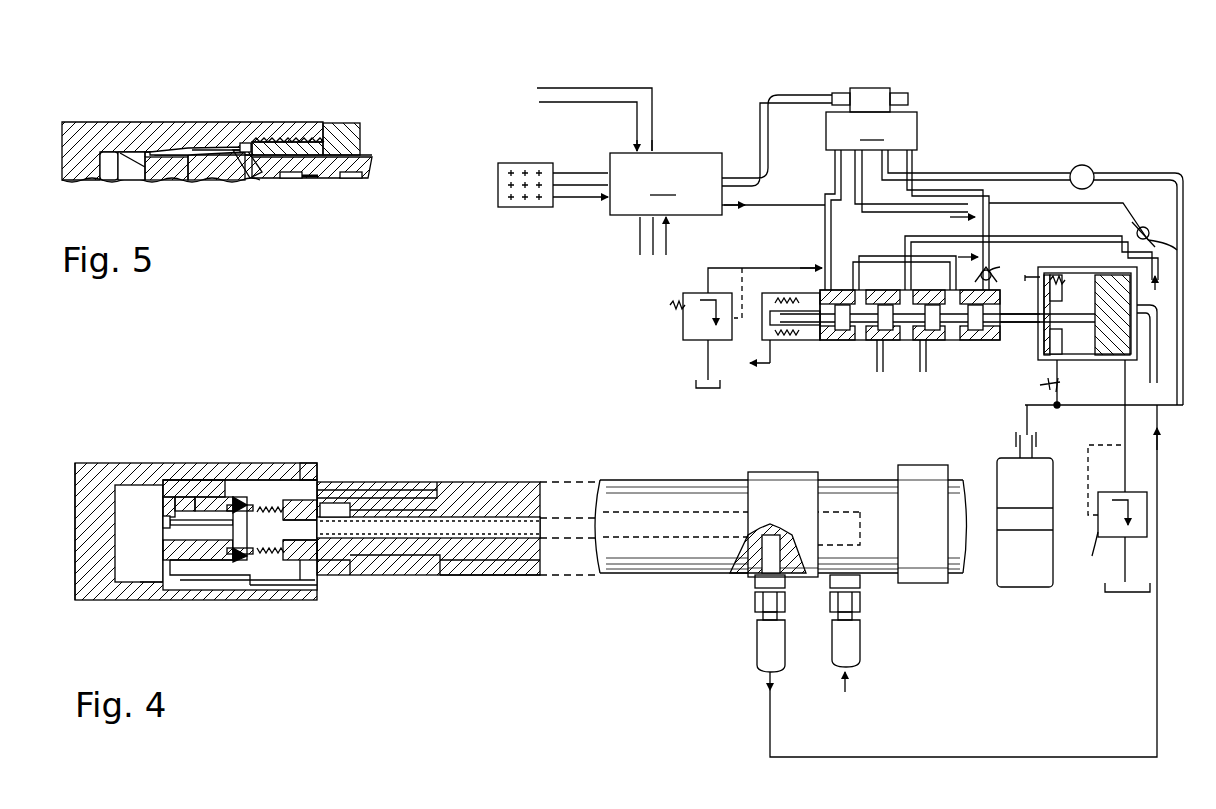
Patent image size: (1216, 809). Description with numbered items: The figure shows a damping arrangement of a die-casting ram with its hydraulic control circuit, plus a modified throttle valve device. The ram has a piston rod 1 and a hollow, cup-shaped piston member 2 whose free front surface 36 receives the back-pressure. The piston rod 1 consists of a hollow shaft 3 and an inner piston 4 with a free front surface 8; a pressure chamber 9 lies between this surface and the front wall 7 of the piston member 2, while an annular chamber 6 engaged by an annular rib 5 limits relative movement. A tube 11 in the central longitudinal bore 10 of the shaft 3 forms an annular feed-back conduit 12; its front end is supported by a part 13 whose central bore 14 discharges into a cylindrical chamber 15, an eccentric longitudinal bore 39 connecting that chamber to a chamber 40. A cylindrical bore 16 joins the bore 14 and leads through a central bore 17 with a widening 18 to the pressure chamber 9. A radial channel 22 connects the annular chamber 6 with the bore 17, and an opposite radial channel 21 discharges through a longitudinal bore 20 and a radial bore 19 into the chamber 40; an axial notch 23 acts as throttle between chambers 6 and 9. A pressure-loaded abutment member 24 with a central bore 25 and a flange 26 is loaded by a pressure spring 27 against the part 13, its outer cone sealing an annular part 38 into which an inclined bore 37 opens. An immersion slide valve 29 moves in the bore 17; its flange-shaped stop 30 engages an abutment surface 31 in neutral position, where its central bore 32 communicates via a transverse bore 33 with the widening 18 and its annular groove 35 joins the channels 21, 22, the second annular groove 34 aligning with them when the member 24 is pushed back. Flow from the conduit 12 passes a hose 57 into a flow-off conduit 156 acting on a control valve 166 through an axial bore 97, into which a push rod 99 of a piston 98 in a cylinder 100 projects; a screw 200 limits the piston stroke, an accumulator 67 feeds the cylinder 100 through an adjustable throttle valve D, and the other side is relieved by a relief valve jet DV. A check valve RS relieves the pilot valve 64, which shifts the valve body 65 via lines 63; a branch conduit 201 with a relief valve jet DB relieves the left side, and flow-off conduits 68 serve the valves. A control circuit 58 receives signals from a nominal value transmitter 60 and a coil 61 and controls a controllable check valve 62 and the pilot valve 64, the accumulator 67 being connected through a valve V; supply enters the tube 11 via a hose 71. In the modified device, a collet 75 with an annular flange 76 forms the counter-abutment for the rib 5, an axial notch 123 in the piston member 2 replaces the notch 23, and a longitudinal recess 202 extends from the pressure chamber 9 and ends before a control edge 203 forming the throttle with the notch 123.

In FIG. 4, the piston rod 1 is at (642, 521).
In FIG. 5, the piston member 2 is at (160, 120).
In FIG. 4, the piston member 2 is at (170, 536).
In FIG. 4, the hollow shaft 3 is at (505, 492).
In FIG. 4, the inner piston 4 is at (420, 492).
In FIG. 5, the annular rib 5 is at (245, 143).
In FIG. 4, the annular rib 5 is at (230, 590).
In FIG. 4, the annular chamber 6 is at (166, 478).
In FIG. 5, the front wall 7 is at (178, 123).
In FIG. 4, the front wall 7 is at (90, 535).
In FIG. 5, the free front surface 8 is at (118, 150).
In FIG. 4, the free front surface 8 is at (162, 502).
In FIG. 5, the pressure chamber 9 is at (108, 170).
In FIG. 4, the pressure chamber 9 is at (123, 495).
In FIG. 4, the central longitudinal bore 10 is at (520, 575).
In FIG. 4, the tube 11 is at (450, 560).
In FIG. 4, the annular feed-back conduit 12 is at (480, 560).
In FIG. 4, the part 13 is at (330, 500).
In FIG. 4, the central bore 14 is at (305, 600).
In FIG. 5, the cylindrical chamber 15 is at (290, 178).
In FIG. 4, the cylindrical chamber 15 is at (318, 470).
In FIG. 4, the cylindrical bore 16 is at (256, 496).
In FIG. 4, the central bore 17 is at (184, 495).
In FIG. 4, the widening 18 is at (133, 600).
In FIG. 4, the radial bore 19 is at (345, 578).
In FIG. 4, the longitudinal bore 20 is at (320, 585).
In FIG. 4, the radial channel 21 is at (205, 585).
In FIG. 5, the radial channel 22 is at (185, 172).
In FIG. 4, the radial channel 22 is at (205, 497).
In FIG. 4, the axially extending notch 23 is at (166, 588).
In FIG. 4, the pressure-loaded abutment member 24 is at (290, 500).
In FIG. 4, the central longitudinal bore 25 is at (270, 505).
In FIG. 4, the flange 26 is at (258, 595).
In FIG. 4, the pressure spring 27 is at (280, 595).
In FIG. 4, the immersion slide valve 29 is at (165, 538).
In FIG. 4, the flange-shaped stop 30 is at (218, 600).
In FIG. 4, the rigid abutment surface 31 is at (222, 503).
In FIG. 4, the central bore 32 is at (183, 600).
In FIG. 4, the transverse bore 33 is at (168, 524).
In FIG. 4, the annular groove 34 is at (170, 482).
In FIG. 4, the annular groove 35 is at (208, 497).
In FIG. 4, the free front surface 36 is at (75, 490).
In FIG. 5, the inclined bore 37 is at (246, 172).
In FIG. 4, the inclined bore 37 is at (240, 495).
In FIG. 4, the annular part 38 is at (242, 590).
In FIG. 5, the longitudinal bore 39 is at (318, 178).
In FIG. 4, the longitudinal bore 39 is at (355, 487).
In FIG. 5, the chamber 40 is at (355, 178).
In FIG. 4, the chamber 40 is at (365, 508).
In FIG. 4, the hose 57 is at (756, 640).
In FIG. 4, the control circuit 58 is at (681, 171).
In FIG. 4, the nominal value transmitter 60 is at (530, 208).
In FIG. 4, the coil 61 is at (790, 342).
In FIG. 4, the controllable check valve 62 is at (1146, 234).
In FIG. 4, the lines 63 is at (775, 140).
In FIG. 4, the pilot valve 64 is at (871, 119).
In FIG. 4, the valve body 65 is at (835, 342).
In FIG. 4, the accumulator 67 is at (997, 472).
In FIG. 4, the flow-off conduits 68 is at (870, 255).
In FIG. 4, the hose 71 is at (865, 632).
In FIG. 5, the collet 75 is at (278, 140).
In FIG. 5, the annular flange 76 is at (340, 135).
In FIG. 4, the axial bore 97 is at (1005, 342).
In FIG. 4, the piston 98 is at (1110, 356).
In FIG. 4, the push rod 99 is at (1036, 326).
In FIG. 4, the cylinder 100 is at (1038, 374).
In FIG. 5, the axial notch 123 is at (172, 150).
In FIG. 4, the flow-off conduit 156 is at (987, 757).
In FIG. 4, the control valve 166 is at (985, 345).
In FIG. 4, the screw 200 is at (1051, 323).
In FIG. 4, the branch conduit 201 is at (800, 266).
In FIG. 5, the longitudinal recess 202 is at (143, 148).
In FIG. 5, the control edge 203 is at (198, 150).
In FIG. 4, the adjustable throttle valve D is at (1063, 390).
In FIG. 4, the relief valve jet DB is at (683, 340).
In FIG. 4, the relief valve jet DV is at (1114, 476).
In FIG. 4, the check valve RS is at (997, 263).
In FIG. 4, the valve V is at (1126, 285).